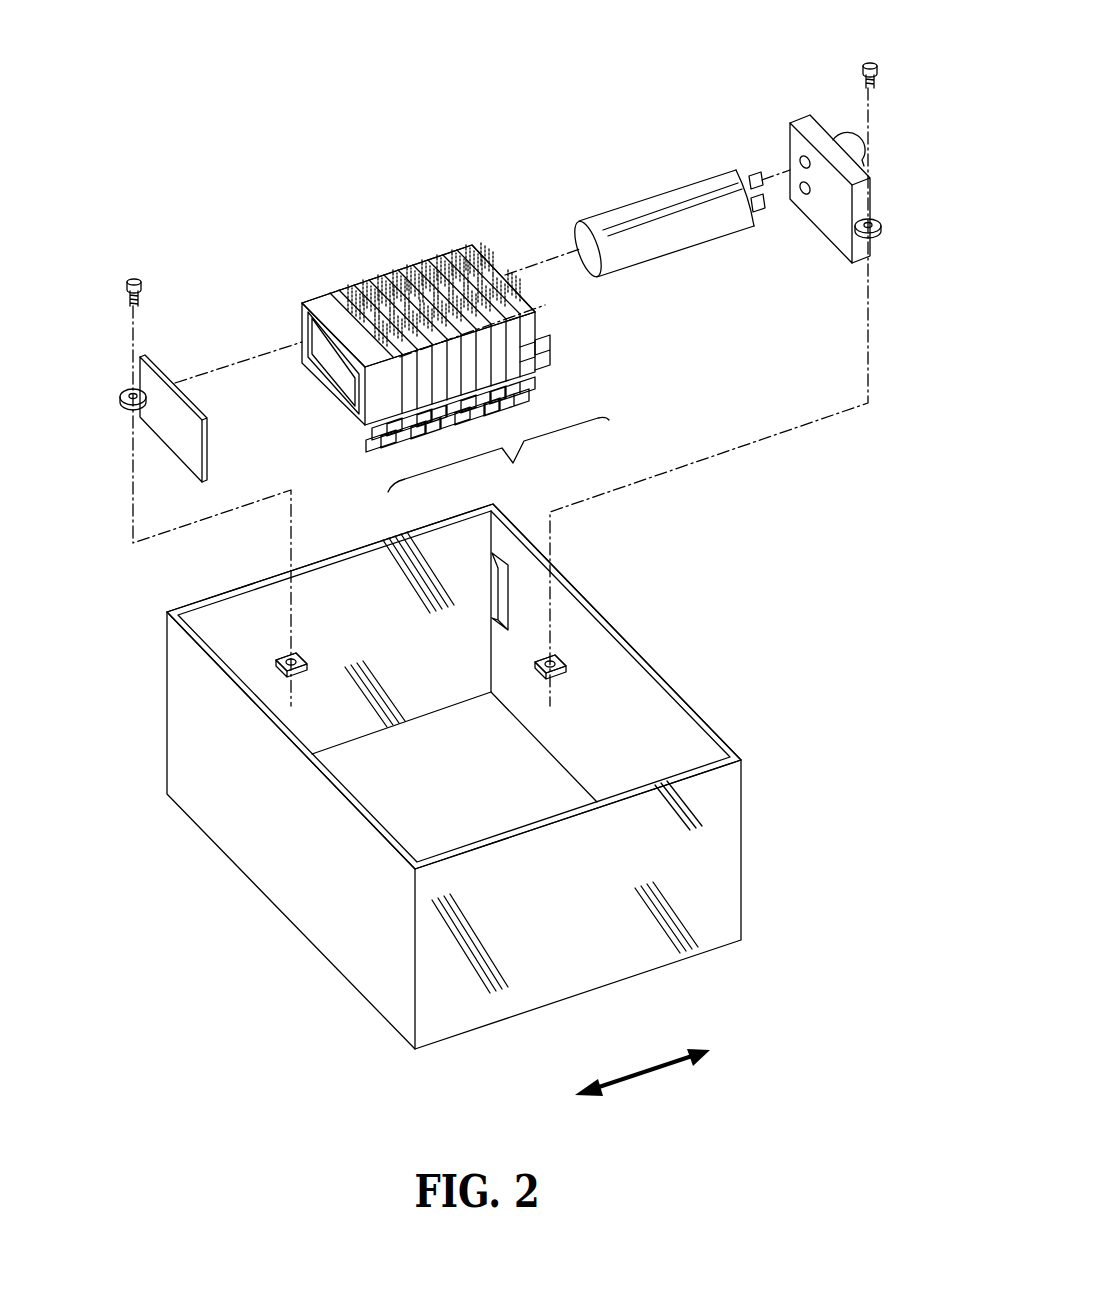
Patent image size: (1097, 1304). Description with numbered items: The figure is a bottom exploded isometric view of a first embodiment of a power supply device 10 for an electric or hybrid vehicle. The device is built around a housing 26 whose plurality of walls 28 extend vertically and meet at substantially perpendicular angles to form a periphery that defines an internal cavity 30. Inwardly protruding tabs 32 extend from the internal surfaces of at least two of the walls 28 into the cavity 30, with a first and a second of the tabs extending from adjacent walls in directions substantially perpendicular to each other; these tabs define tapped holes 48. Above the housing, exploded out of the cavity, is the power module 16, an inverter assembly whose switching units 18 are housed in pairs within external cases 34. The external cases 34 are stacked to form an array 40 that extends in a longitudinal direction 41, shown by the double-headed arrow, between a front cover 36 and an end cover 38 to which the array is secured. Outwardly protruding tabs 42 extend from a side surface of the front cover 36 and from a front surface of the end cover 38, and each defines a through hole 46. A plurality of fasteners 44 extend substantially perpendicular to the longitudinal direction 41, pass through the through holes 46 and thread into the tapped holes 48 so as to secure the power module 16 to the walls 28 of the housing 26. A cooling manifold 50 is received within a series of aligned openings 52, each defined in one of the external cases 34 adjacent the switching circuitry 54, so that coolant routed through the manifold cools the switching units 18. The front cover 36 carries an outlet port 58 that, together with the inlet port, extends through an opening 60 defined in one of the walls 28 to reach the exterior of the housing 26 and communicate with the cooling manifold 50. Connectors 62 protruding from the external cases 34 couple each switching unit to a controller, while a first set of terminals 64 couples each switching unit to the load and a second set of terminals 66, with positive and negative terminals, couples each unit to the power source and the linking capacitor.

The power supply device 10 is at (303, 84).
The power module 16 is at (366, 208).
The switching units 18 is at (393, 262).
The external cases 34 is at (427, 250).
The housing 26 is at (156, 688).
The walls 28 is at (683, 740).
The internal cavity 30 is at (447, 807).
The inwardly protruding tabs 32 is at (322, 653).
The front cover 36 is at (794, 108).
The end cover 38 is at (174, 362).
The array 40 is at (513, 463).
The longitudinal direction 41 is at (636, 1076).
The outwardly protruding tabs 42 is at (130, 405).
The fasteners 44 is at (127, 283).
The through holes 46 is at (131, 392).
The tapped holes 48 is at (290, 655).
The cooling manifold 50 is at (666, 190).
The aligned openings 52 is at (300, 327).
The switching circuitry 54 is at (343, 372).
The outlet port 58 is at (840, 138).
The opening 60 is at (497, 575).
The connectors 62 is at (370, 288).
The first set of terminals 64 is at (546, 346).
The second set of terminals 66 is at (447, 434).